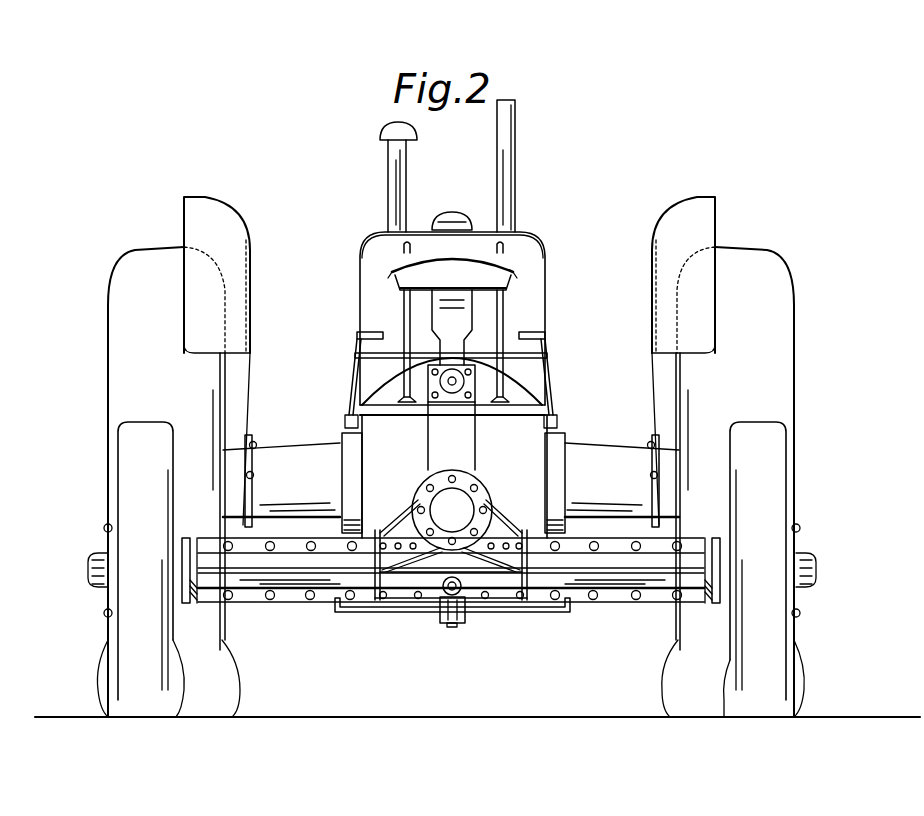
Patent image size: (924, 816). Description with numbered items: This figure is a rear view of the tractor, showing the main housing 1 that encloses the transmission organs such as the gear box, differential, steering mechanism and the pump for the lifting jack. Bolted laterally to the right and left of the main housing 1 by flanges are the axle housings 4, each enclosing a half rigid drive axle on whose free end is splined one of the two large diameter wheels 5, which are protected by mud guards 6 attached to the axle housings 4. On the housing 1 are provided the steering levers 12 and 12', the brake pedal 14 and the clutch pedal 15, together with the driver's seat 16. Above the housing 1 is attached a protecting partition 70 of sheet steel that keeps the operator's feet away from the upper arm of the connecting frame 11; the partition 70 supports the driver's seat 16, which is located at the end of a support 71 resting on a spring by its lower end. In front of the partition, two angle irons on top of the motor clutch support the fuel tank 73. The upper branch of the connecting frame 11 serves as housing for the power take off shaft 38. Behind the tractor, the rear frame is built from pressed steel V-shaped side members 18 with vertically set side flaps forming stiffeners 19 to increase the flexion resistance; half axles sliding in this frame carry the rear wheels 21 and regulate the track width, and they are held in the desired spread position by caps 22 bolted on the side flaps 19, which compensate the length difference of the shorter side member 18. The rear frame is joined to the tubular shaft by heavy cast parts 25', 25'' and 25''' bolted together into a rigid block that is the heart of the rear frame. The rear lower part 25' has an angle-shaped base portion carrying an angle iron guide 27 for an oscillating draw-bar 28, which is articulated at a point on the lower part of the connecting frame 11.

The main housing 1 is at (525, 458).
The axle housing 4 is at (273, 453).
The wheel 5 is at (145, 257).
The mud guard 6 is at (200, 210).
The connecting frame 11 is at (458, 443).
The steering lever 12 is at (370, 288).
The steering lever 12' is at (545, 287).
The brake pedal 14 is at (552, 338).
The clutch pedal 15 is at (362, 335).
The driver's seat 16 is at (421, 270).
The side member 18 is at (250, 584).
The stiffener 19 is at (290, 600).
The rear wheel 21 is at (128, 443).
The cap 22 is at (173, 602).
The rear lower cast part 25' is at (498, 595).
The cast part 25'' is at (458, 539).
The cast part 25''' is at (435, 502).
The angle iron guide 27 is at (488, 613).
The oscillating draw-bar 28 is at (443, 613).
The power take off shaft 38 is at (462, 381).
The protecting partition 70 is at (373, 357).
The seat support 71 is at (448, 308).
The fuel tank 73 is at (533, 253).